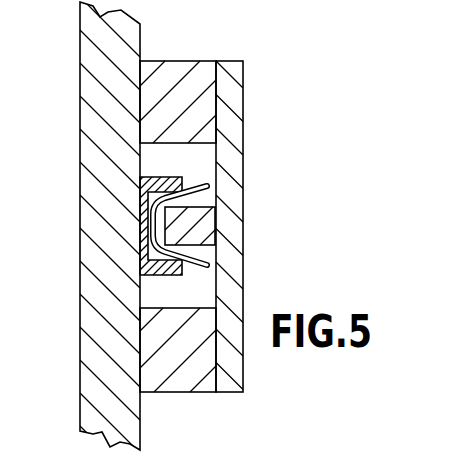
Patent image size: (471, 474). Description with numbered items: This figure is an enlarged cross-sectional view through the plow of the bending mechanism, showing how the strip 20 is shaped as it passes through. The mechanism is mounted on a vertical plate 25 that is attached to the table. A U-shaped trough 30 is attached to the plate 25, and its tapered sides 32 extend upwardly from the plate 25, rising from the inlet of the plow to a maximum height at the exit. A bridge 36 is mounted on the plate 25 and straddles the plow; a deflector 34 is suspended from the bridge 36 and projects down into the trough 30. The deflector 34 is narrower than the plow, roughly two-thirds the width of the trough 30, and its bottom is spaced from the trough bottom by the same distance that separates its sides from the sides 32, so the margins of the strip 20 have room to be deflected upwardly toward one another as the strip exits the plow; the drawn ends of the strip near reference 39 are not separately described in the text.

The strip 20 is at (150, 228).
The vertical plate 25 is at (93, 348).
The U-shaped trough 30 is at (187, 172).
The tapered sides 32 is at (160, 178).
The deflector 34 is at (205, 227).
The bridge 36 is at (233, 100).
The spring ends 39 is at (207, 186).